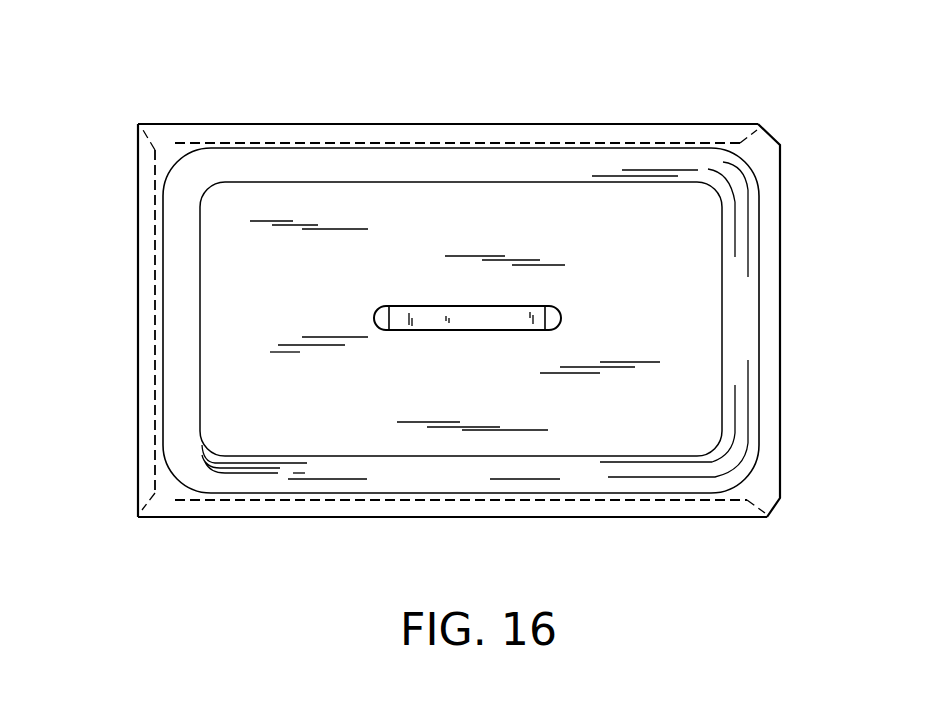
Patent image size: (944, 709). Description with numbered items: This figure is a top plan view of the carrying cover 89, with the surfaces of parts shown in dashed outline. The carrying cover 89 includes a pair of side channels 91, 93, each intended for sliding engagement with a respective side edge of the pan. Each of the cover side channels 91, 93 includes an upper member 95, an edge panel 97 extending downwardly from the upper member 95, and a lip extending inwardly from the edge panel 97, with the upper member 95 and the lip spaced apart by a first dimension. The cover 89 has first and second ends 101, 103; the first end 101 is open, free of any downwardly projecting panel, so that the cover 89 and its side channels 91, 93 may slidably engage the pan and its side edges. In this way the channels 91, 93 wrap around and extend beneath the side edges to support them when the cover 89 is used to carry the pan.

The carrying cover 89 is at (585, 213).
The side channel 91 is at (452, 128).
The side channel 93 is at (538, 508).
The upper member 95 is at (327, 130).
The edge panel 97 is at (280, 124).
The first end 101 is at (772, 187).
The second end 103 is at (143, 220).